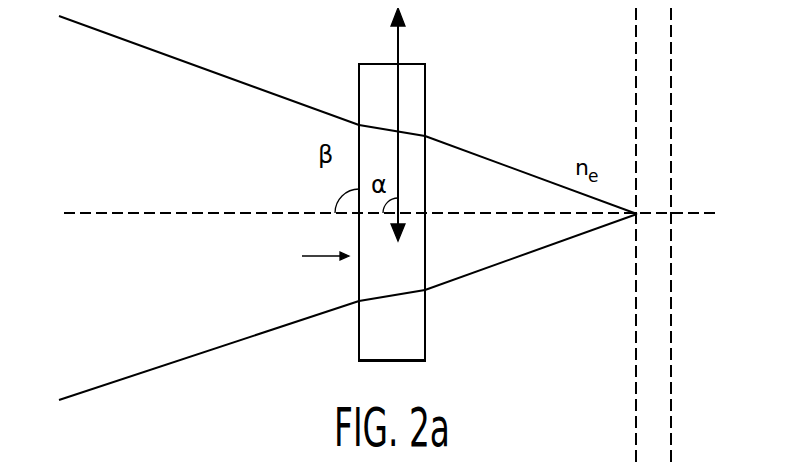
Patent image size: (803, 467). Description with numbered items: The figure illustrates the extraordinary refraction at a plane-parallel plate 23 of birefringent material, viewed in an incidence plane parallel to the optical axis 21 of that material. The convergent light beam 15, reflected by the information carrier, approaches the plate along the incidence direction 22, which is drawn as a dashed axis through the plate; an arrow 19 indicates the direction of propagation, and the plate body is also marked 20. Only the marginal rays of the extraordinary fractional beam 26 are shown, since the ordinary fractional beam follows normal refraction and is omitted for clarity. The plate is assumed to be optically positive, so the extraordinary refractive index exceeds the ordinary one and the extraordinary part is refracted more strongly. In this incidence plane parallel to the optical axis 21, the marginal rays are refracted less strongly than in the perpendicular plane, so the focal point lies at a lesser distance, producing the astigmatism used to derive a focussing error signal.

The light beam 15 is at (123, 115).
The light propagation direction 19 is at (313, 257).
The birefringent plate 20 is at (424, 107).
The optical axis 21 is at (397, 42).
The incidence direction 22 is at (120, 211).
The plane-parallel plate 23 is at (415, 330).
The extraordinary fractional beam 26 is at (481, 197).